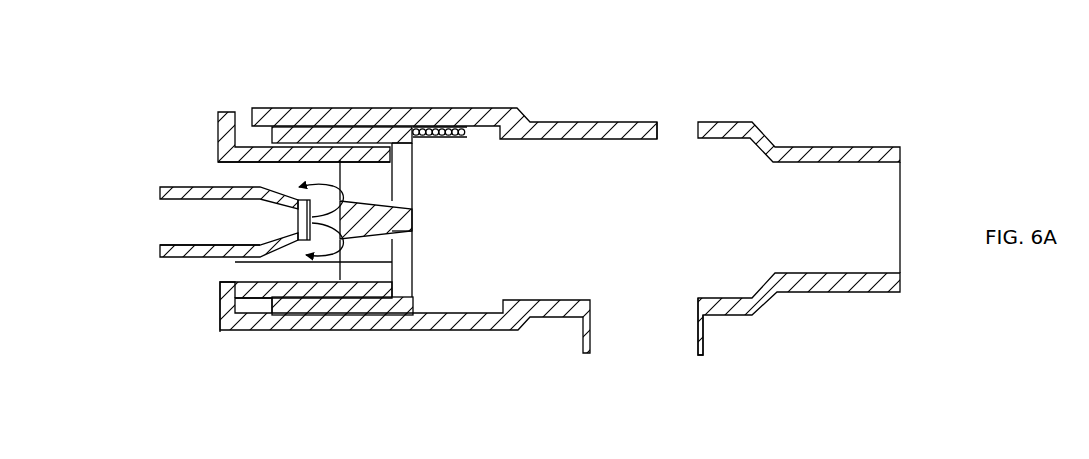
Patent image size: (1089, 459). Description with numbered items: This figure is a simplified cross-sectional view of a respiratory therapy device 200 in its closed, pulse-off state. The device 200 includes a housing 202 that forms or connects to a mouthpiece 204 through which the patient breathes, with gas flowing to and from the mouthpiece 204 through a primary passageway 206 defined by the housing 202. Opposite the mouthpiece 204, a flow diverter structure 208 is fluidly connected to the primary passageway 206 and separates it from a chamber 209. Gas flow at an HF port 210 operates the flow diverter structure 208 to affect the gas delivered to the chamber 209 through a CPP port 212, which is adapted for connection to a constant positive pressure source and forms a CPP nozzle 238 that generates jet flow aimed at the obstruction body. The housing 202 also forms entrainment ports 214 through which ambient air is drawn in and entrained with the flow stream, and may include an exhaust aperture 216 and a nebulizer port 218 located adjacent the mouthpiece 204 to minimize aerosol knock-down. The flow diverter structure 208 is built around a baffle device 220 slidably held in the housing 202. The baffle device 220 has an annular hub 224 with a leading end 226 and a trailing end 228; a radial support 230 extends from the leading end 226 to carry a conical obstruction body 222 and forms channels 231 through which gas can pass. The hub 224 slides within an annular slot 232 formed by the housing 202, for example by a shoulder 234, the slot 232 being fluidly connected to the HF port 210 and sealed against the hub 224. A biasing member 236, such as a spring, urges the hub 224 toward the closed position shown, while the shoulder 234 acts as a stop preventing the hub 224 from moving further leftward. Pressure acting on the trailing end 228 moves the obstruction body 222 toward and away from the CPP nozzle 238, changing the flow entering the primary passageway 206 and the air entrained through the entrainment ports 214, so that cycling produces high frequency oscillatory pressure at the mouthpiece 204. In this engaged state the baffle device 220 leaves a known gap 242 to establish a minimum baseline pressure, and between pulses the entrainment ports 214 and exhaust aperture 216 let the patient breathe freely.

The respiratory therapy device 200 is at (422, 85).
The housing 202 is at (813, 229).
The mouthpiece 204 is at (876, 142).
The primary passageway 206 is at (544, 282).
The flow diverter structure 208 is at (377, 262).
The chamber 209 is at (275, 263).
The HF port 210 is at (248, 112).
The CPP port 212 is at (175, 259).
The entrainment port 214 is at (233, 166).
The exhaust aperture 216 is at (659, 128).
The nebulizer port 218 is at (695, 357).
The baffle device 220 is at (418, 157).
The obstruction body 222 is at (362, 215).
The annular hub 224 is at (364, 311).
The leading end 226 is at (402, 130).
The trailing end 228 is at (270, 134).
The radial support 230 is at (417, 273).
The channels 231 is at (413, 241).
The annular slot 232 is at (263, 308).
The shoulder 234 is at (283, 163).
The biasing member 236 is at (455, 124).
The CPP nozzle 238 is at (260, 244).
The gap 242 is at (340, 210).